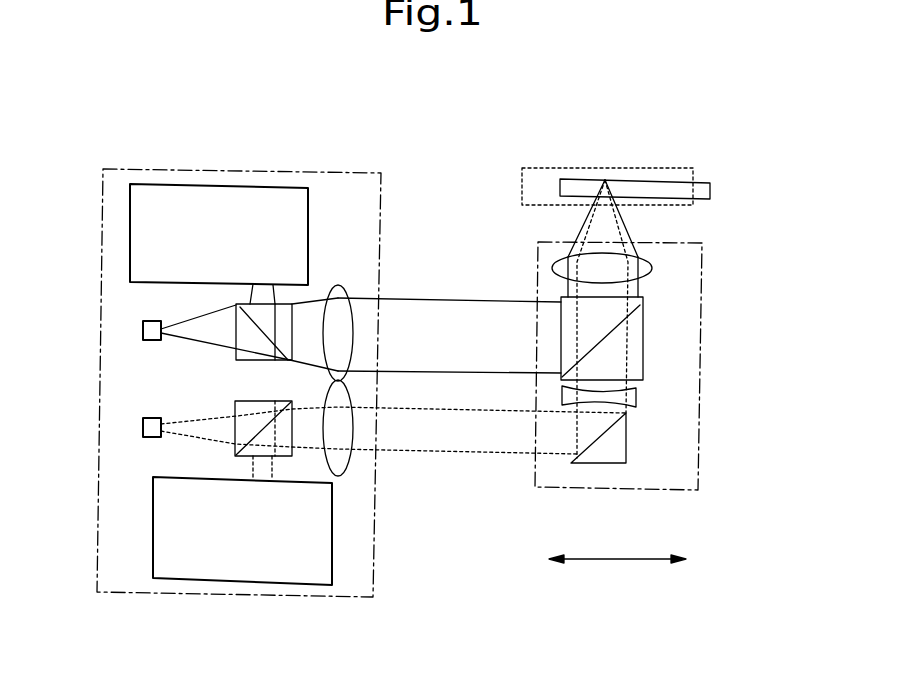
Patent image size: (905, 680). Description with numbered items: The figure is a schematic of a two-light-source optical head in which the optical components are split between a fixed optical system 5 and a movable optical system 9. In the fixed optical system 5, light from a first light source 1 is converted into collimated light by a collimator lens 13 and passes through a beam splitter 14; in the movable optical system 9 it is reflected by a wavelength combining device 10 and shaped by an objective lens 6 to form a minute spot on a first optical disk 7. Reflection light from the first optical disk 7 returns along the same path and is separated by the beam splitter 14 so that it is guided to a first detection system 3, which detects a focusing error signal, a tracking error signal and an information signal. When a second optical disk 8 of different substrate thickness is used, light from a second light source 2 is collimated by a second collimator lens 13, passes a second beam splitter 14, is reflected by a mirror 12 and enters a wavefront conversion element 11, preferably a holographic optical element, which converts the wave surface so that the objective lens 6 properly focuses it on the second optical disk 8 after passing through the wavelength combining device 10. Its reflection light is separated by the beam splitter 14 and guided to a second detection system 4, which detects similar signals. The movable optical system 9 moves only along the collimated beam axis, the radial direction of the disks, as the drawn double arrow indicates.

The first light source 1 is at (142, 332).
The second light source 2 is at (142, 425).
The first detection system 3 is at (150, 185).
The second detection system 4 is at (190, 573).
The fixed optical system 5 is at (277, 597).
The objective lens 6 is at (650, 270).
The first optical disk 7 is at (708, 193).
The second optical disk 8 is at (543, 170).
The movable optical system 9 is at (613, 493).
The wavelength combining device 10 is at (637, 352).
The wavefront conversion element 11 is at (565, 393).
The mirror 12 is at (615, 442).
The collimator lens 13 is at (336, 293).
The beam splitter 14 is at (248, 340).